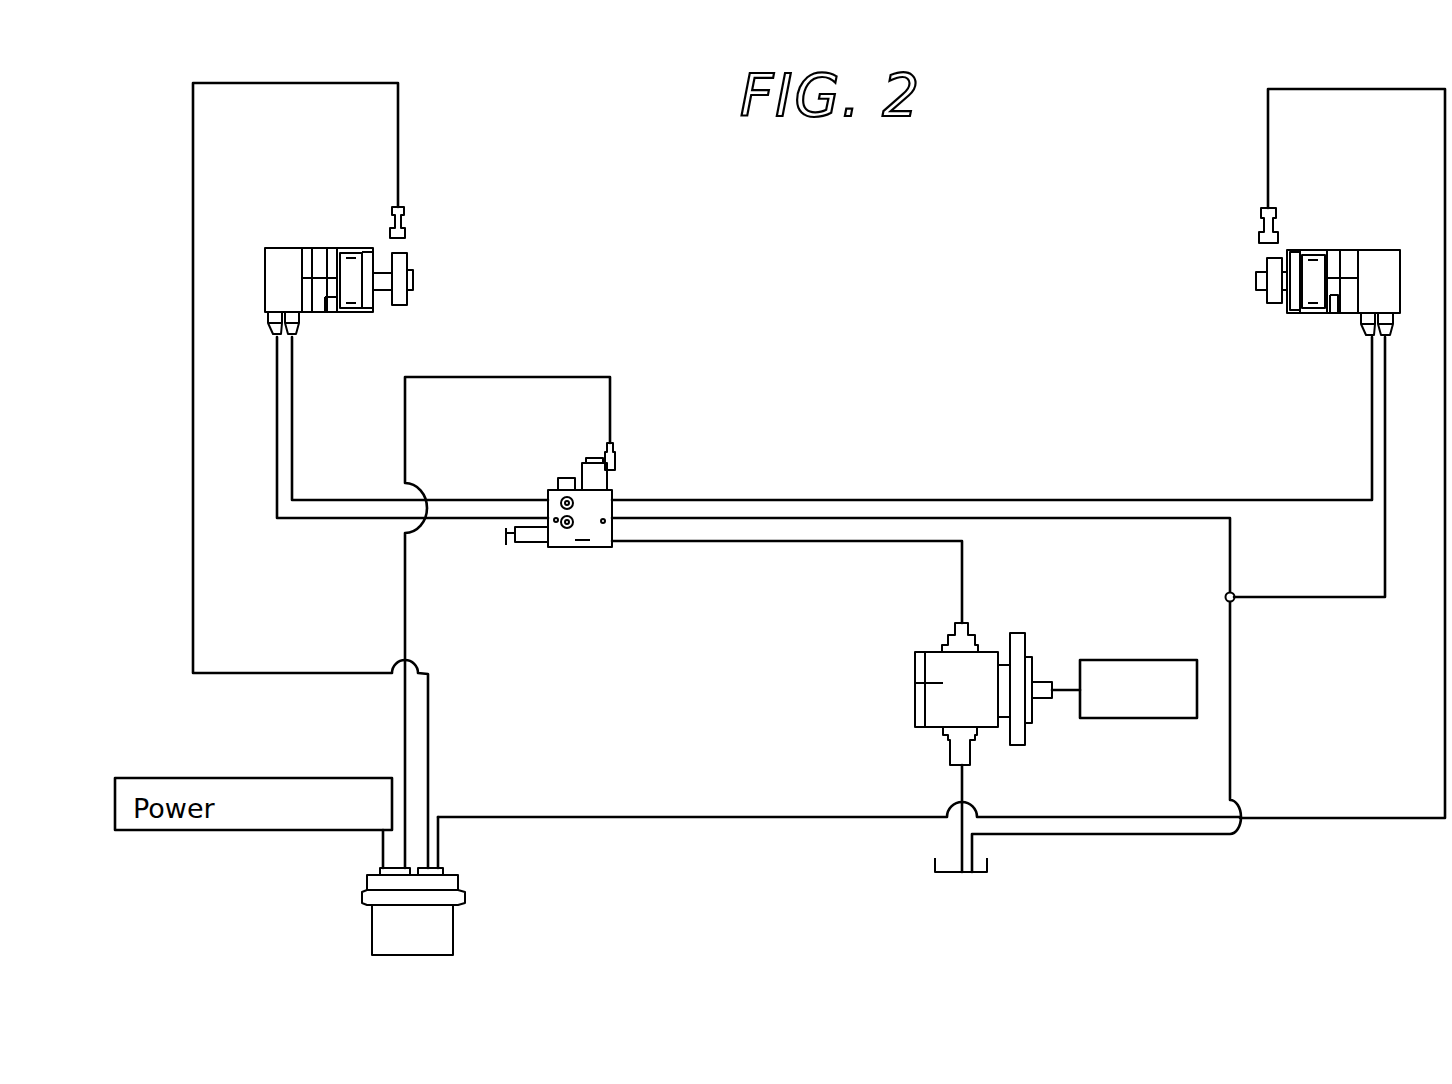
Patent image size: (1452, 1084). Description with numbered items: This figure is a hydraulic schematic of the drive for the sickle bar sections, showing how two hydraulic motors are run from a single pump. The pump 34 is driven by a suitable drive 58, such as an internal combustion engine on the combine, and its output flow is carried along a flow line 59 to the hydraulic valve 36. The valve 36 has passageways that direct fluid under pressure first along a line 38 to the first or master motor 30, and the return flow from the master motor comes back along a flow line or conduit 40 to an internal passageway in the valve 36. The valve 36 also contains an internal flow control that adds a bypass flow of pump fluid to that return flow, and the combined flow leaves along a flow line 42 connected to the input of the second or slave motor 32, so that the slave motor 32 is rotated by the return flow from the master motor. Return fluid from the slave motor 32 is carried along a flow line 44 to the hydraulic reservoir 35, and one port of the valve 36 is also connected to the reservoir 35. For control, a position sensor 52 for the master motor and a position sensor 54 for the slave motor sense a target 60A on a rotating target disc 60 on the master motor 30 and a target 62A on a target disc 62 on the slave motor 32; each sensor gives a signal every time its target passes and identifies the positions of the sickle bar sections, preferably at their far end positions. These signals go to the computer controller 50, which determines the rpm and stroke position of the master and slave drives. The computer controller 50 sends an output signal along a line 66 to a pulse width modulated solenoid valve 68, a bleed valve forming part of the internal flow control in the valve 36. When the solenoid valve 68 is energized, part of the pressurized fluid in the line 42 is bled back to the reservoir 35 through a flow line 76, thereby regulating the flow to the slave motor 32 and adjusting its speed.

The master motor 30 is at (327, 247).
The slave motor 32 is at (1335, 250).
The pump 34 is at (943, 683).
The hydraulic reservoir 35 is at (972, 875).
The hydraulic valve 36 is at (565, 538).
The line 38 is at (460, 522).
The flow line or conduit 40 is at (342, 497).
The flow line 42 is at (788, 498).
The flow line 44 is at (1320, 598).
The computer controller 50 is at (440, 920).
The position sensor 52 is at (408, 222).
The position sensor 54 is at (1260, 232).
The drive 58 is at (1133, 718).
The flow line 59 is at (962, 541).
The target disc 60 is at (413, 270).
The target 60A is at (407, 252).
The target disc 62 is at (1262, 302).
The target 62A is at (1265, 262).
The line 66 is at (403, 723).
The pulse width modulated solenoid valve 68 is at (595, 472).
The flow line 76 is at (1232, 552).